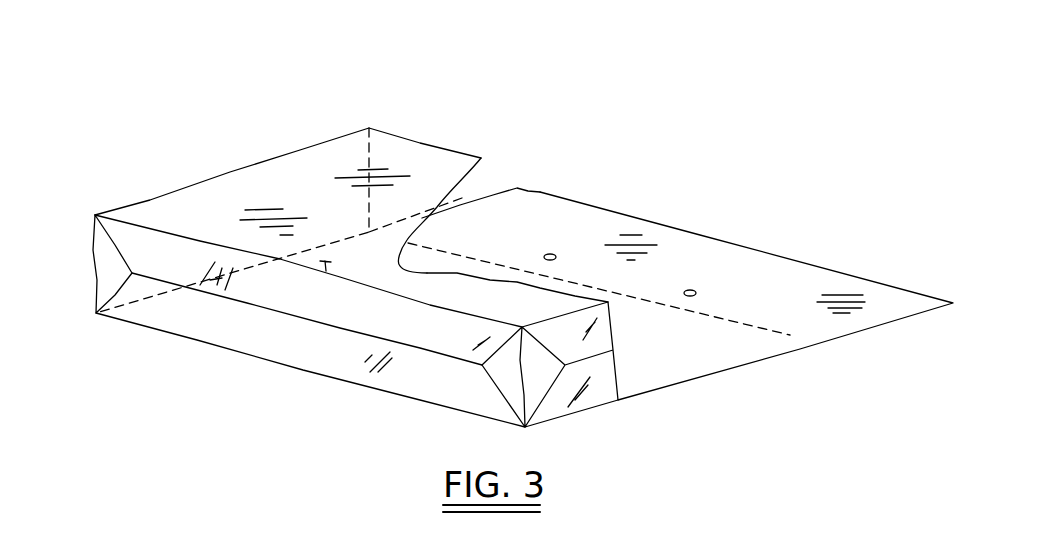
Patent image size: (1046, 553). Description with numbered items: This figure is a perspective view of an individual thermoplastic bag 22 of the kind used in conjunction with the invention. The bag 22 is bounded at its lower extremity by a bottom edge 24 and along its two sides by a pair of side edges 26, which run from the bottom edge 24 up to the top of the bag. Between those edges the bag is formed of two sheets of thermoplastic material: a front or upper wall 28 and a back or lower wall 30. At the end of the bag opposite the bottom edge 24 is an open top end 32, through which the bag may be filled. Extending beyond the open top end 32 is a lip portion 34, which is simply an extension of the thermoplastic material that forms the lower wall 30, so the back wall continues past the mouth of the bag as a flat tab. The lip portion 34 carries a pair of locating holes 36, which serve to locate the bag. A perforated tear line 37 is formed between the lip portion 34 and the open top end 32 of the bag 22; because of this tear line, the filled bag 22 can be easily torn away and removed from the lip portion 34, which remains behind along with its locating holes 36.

The thermoplastic bag 22 is at (368, 68).
The bottom edge 24 is at (302, 372).
The side edges 26 is at (283, 182).
The front or upper wall 28 is at (197, 340).
The back or lower wall 30 is at (643, 372).
The open top end 32 is at (504, 118).
The lip portion 34 is at (525, 204).
The locating holes 36 is at (553, 253).
The perforated tear line 37 is at (780, 337).